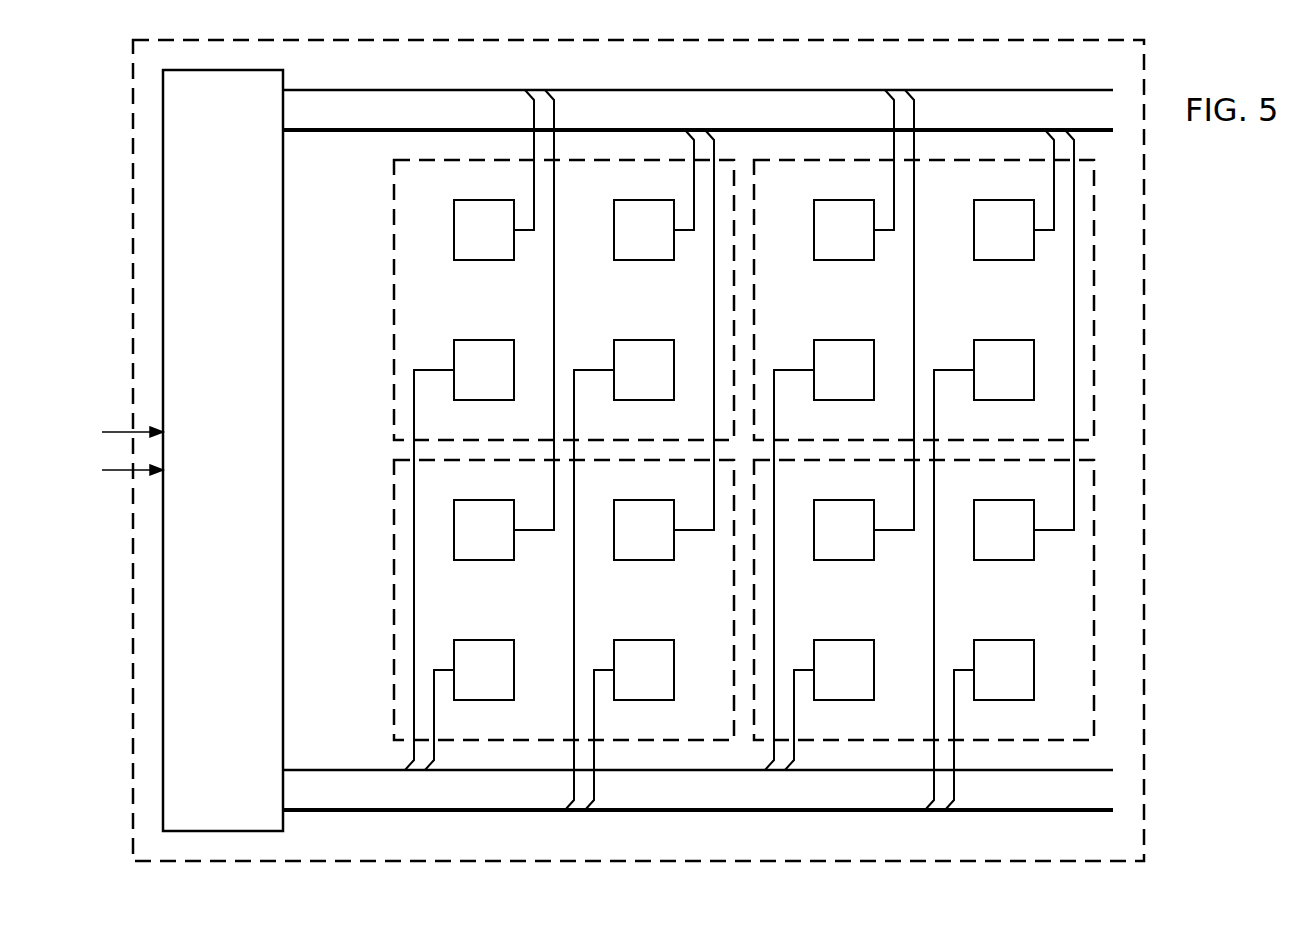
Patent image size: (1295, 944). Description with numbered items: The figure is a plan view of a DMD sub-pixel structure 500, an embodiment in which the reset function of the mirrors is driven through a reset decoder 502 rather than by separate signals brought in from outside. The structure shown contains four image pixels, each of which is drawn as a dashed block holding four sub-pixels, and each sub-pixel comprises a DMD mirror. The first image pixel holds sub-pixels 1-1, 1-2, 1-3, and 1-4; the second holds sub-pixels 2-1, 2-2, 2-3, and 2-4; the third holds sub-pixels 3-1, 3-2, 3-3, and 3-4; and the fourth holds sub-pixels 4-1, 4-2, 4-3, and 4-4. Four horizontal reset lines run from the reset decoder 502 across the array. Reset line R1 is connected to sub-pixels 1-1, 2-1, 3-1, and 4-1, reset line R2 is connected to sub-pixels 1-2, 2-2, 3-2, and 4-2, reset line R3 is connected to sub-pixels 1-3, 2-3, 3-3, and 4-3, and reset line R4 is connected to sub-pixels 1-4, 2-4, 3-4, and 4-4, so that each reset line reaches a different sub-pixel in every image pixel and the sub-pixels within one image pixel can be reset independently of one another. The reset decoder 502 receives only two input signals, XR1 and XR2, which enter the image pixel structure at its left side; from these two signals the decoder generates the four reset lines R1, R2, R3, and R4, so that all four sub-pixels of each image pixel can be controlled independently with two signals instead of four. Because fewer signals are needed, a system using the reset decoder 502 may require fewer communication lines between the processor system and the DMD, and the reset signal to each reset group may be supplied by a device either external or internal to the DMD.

The DMD sub-pixel structure 500 is at (1195, 198).
The reset decoder 502 is at (240, 494).
The reset line R1 is at (698, 78).
The reset line R2 is at (698, 117).
The reset line R3 is at (698, 758).
The reset line R4 is at (698, 798).
The signal XR1 is at (111, 432).
The signal XR2 is at (111, 470).
The sub-pixel 1-1 is at (494, 175).
The sub-pixel 1-2 is at (654, 195).
The sub-pixel 1-3 is at (459, 555).
The sub-pixel 1-4 is at (619, 575).
The sub-pixel 2-1 is at (854, 175).
The sub-pixel 2-2 is at (1014, 195).
The sub-pixel 2-3 is at (819, 555).
The sub-pixel 2-4 is at (979, 575).
The sub-pixel 3-1 is at (504, 325).
The sub-pixel 3-2 is at (664, 345).
The sub-pixel 3-3 is at (469, 705).
The sub-pixel 3-4 is at (629, 725).
The sub-pixel 4-1 is at (864, 325).
The sub-pixel 4-2 is at (1024, 345).
The sub-pixel 4-3 is at (829, 705).
The sub-pixel 4-4 is at (989, 725).